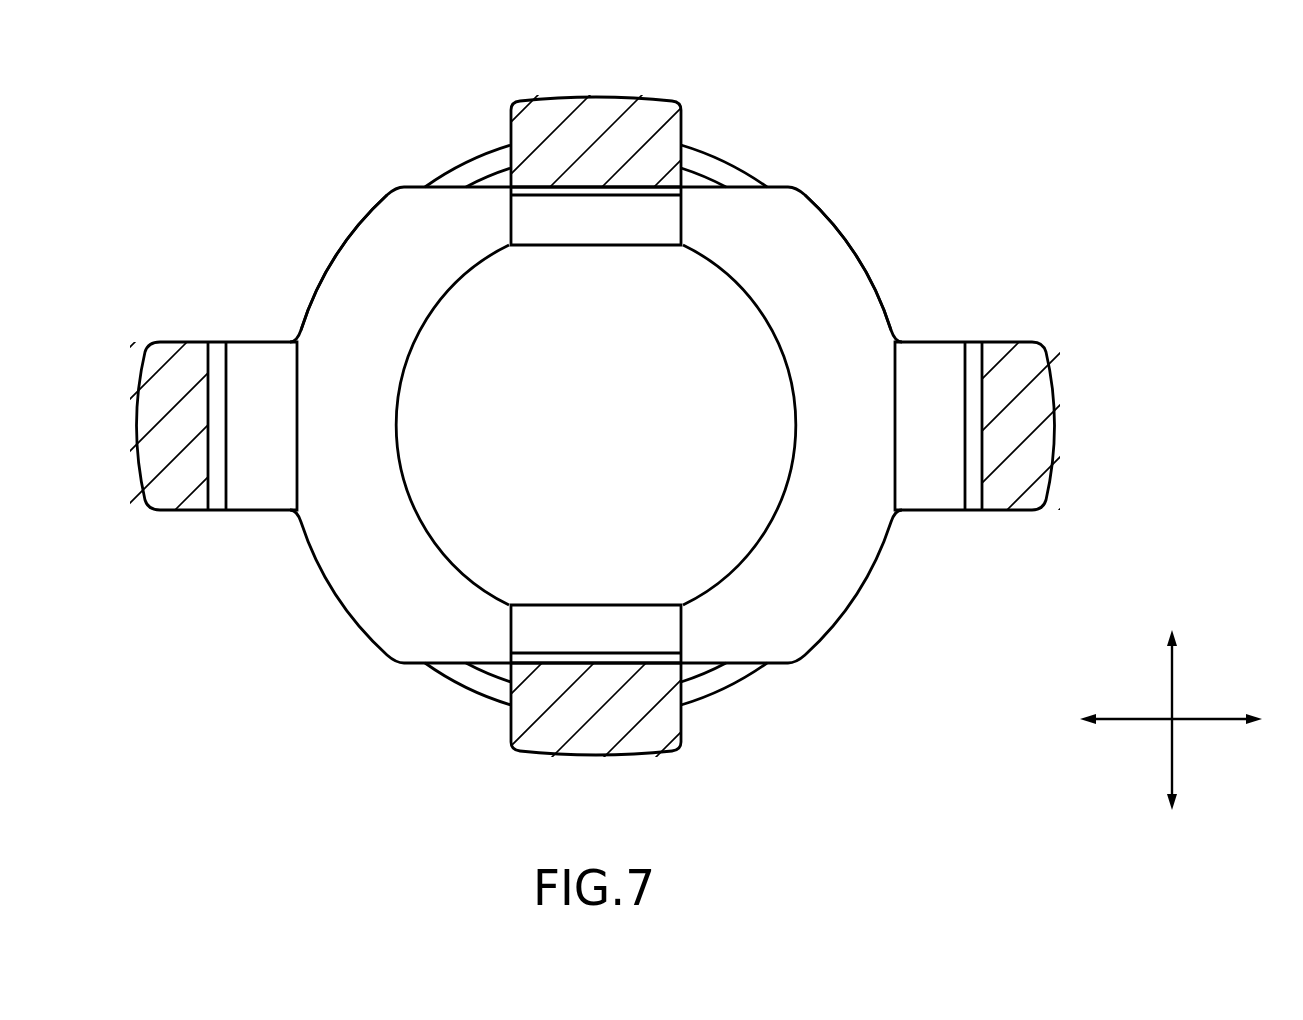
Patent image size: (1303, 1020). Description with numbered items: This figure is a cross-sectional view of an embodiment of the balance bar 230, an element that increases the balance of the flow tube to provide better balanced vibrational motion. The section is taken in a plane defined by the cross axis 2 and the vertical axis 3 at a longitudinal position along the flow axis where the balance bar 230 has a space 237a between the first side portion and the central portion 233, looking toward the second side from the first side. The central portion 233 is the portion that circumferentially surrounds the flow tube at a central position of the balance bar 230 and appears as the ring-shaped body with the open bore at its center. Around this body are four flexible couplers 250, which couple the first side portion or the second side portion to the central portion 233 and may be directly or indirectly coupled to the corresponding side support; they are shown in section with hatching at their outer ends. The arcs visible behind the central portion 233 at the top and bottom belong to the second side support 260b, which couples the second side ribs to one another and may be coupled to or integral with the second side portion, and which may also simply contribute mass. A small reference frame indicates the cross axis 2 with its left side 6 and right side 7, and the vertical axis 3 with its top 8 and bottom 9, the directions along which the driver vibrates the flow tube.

The balance bar 230 is at (903, 188).
The central portion 233 is at (355, 258).
The space 237a is at (845, 302).
The flexible couplers 250 is at (588, 128).
The second side support 260b is at (465, 168).
The cross axis 2 is at (1132, 720).
The vertical axis 3 is at (1172, 690).
The left side 6 is at (1250, 715).
The right side 7 is at (1090, 715).
The top 8 is at (1168, 640).
The bottom 9 is at (1178, 793).